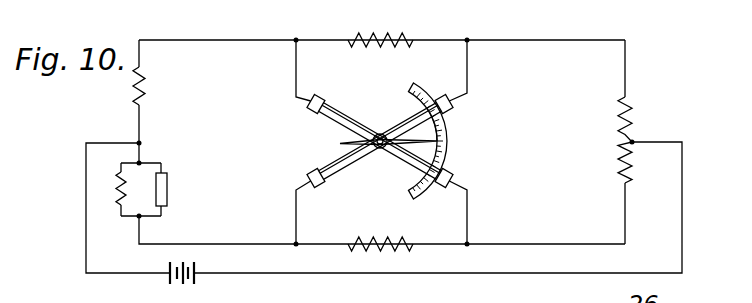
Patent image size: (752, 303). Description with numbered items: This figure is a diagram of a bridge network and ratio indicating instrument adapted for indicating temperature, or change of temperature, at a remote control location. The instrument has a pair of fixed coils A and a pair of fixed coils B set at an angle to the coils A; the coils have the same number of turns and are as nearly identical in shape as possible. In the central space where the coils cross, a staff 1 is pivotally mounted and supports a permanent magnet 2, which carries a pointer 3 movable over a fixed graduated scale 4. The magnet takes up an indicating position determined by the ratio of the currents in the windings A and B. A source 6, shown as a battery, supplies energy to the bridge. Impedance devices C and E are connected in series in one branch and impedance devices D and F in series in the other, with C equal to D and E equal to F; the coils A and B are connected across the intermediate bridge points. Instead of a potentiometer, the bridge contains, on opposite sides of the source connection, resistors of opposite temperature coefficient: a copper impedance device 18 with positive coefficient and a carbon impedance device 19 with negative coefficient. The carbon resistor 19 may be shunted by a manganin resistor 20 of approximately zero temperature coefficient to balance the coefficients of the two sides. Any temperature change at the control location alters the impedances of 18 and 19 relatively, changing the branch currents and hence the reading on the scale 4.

The staff 1 is at (381, 134).
The permanent magnet 2 is at (340, 144).
The pointer 3 is at (450, 148).
The fixed graduated scale 4 is at (445, 127).
The source 6 is at (188, 282).
The impedance device 18 is at (146, 95).
The impedance device 19 is at (167, 186).
The resistor 20 is at (119, 196).
The fixed coils A is at (380, 133).
The fixed coils B is at (380, 147).
The impedance device C is at (380, 30).
The impedance device D is at (380, 235).
The impedance device E is at (635, 119).
The impedance device F is at (635, 162).